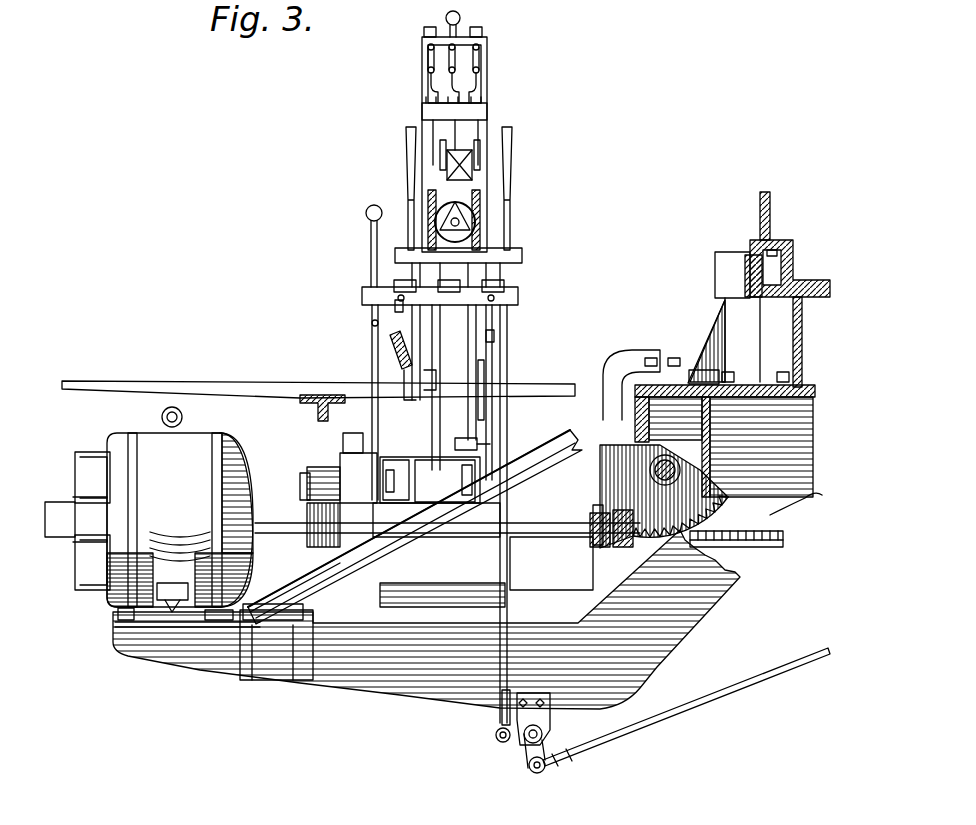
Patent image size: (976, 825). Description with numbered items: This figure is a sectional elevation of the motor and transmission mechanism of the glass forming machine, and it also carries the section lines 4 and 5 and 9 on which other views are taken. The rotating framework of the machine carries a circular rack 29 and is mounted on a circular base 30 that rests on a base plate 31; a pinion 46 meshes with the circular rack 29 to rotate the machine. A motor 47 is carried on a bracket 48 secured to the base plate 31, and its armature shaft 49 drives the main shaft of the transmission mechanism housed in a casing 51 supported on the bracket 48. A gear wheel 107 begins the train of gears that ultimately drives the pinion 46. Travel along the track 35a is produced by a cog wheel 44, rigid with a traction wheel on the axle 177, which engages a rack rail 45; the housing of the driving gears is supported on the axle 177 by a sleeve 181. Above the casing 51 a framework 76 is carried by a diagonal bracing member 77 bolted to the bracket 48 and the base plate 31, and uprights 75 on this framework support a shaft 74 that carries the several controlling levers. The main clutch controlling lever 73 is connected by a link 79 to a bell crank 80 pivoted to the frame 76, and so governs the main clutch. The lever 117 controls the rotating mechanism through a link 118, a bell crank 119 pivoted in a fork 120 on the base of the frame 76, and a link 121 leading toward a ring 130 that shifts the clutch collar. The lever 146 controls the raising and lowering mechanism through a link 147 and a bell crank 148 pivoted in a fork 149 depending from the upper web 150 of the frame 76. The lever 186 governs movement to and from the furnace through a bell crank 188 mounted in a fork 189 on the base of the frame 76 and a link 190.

The lever 117 is at (470, 140).
The lever 186 is at (440, 145).
The lever 146 is at (445, 150).
The section line 9— 9 is at (280, 445).
The section line 4— 4 is at (515, 432).
The main clutch controlling lever 73 is at (371, 242).
The shaft 74 is at (518, 300).
The uprights 75 is at (398, 306).
The framework 76 is at (490, 400).
The link 118 is at (480, 362).
The link 79 is at (368, 323).
The link 147 is at (437, 337).
The upper web 150 is at (428, 380).
The sleeve 181 is at (410, 378).
The fork 149 is at (400, 410).
The link 190 is at (396, 480).
The bell crank 148 is at (445, 481).
The bell crank 188 is at (450, 480).
The link 121 is at (480, 445).
The bell crank 80 is at (358, 480).
The armature shaft 49 is at (292, 500).
The section line 5— 5 is at (252, 520).
The fork 189 is at (439, 555).
The motor 47 is at (150, 445).
The bracket 48 is at (402, 690).
The casing 51 is at (545, 580).
The gear wheel 107 is at (636, 540).
The bell crank 119 is at (470, 462).
The fork 120 is at (415, 530).
The diagonal bracing member 77 is at (413, 553).
The pinion 46 is at (723, 258).
The circular rack 29 is at (745, 275).
The circular base 30 is at (795, 350).
The base plate 31 is at (800, 395).
The ring 130 is at (656, 423).
The axle 177 is at (680, 470).
The cog wheel 44 is at (720, 510).
The rack rail 45 is at (780, 535).
The track 35a is at (801, 500).